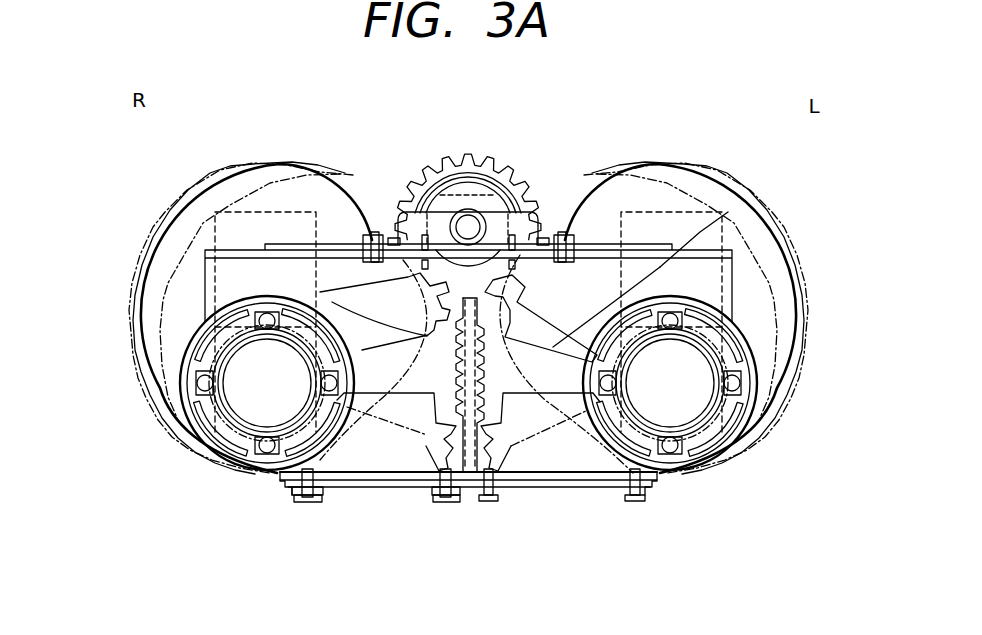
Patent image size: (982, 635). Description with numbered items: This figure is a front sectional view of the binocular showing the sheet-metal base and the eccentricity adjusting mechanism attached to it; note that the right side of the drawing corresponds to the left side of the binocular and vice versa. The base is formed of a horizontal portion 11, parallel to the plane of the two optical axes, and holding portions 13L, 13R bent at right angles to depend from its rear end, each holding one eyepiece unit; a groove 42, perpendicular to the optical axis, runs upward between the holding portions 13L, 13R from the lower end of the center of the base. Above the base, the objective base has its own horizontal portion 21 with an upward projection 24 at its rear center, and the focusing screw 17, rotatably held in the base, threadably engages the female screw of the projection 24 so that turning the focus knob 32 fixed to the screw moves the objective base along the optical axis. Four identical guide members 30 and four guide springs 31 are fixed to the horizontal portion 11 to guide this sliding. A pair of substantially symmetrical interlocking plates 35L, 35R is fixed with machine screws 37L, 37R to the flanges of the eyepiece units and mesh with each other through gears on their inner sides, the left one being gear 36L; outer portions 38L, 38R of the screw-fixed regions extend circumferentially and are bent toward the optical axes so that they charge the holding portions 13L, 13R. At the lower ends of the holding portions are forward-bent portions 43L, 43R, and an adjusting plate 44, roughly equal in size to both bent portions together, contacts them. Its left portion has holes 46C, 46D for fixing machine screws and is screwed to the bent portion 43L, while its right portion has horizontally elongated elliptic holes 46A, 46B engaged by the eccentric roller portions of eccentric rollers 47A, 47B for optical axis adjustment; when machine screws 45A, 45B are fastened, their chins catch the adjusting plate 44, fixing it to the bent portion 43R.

The horizontal portion 11 is at (765, 280).
The holding portion 13R is at (225, 275).
The holding portion 13L is at (722, 262).
The focusing screw 17 is at (473, 222).
The horizontal portion 21 is at (657, 244).
The projection 24 is at (497, 208).
The guide member 30 is at (362, 236).
The guide spring 31 is at (392, 235).
The focus knob 32 is at (453, 157).
The interlocking plate 35R is at (332, 302).
The interlocking plate 35L is at (660, 267).
The gear 36L is at (525, 292).
The machine screw 37R is at (205, 381).
The machine screw 37L is at (732, 382).
The outer portion 38R is at (238, 310).
The outer portion 38L is at (700, 312).
The groove 42 is at (472, 474).
The bent portion 43R is at (282, 478).
The bent portion 43L is at (663, 480).
The adjusting plate 44 is at (588, 490).
The machine screw 45A is at (306, 503).
The machine screw 45B is at (445, 503).
The elliptic hole 46A is at (326, 485).
The elliptic hole 46B is at (428, 485).
The hole 46C is at (500, 492).
The hole 46D is at (638, 496).
The eccentric roller 47A is at (292, 497).
The eccentric roller 47B is at (460, 497).